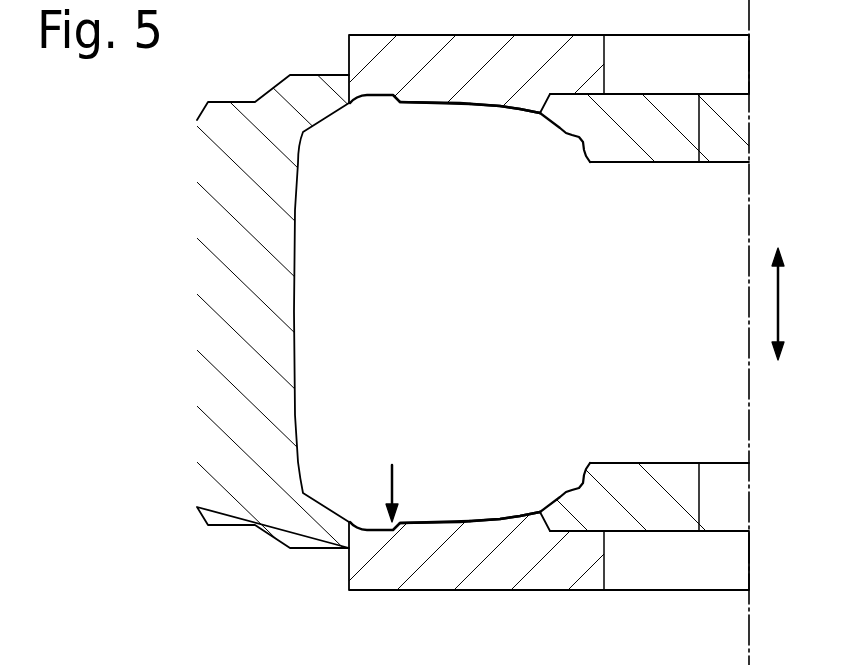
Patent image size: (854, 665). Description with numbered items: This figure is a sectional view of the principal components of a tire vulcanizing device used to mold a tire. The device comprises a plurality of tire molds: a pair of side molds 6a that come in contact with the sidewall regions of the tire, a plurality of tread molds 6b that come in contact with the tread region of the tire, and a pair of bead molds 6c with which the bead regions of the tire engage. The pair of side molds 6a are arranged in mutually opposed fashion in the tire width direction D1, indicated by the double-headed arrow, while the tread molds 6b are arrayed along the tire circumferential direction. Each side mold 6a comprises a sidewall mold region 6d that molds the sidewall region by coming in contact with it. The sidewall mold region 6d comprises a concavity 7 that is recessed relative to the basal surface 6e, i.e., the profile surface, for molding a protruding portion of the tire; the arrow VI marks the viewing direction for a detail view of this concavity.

The side mold 6a is at (347, 52).
The tread mold 6b is at (197, 313).
The bead mold 6c is at (670, 163).
The sidewall mold region 6d is at (453, 107).
The basal surface 6e is at (497, 110).
The concavity 7 is at (368, 97).
The view direction arrow for FIG. 6 VI is at (390, 481).
The tire width direction D1 is at (792, 304).